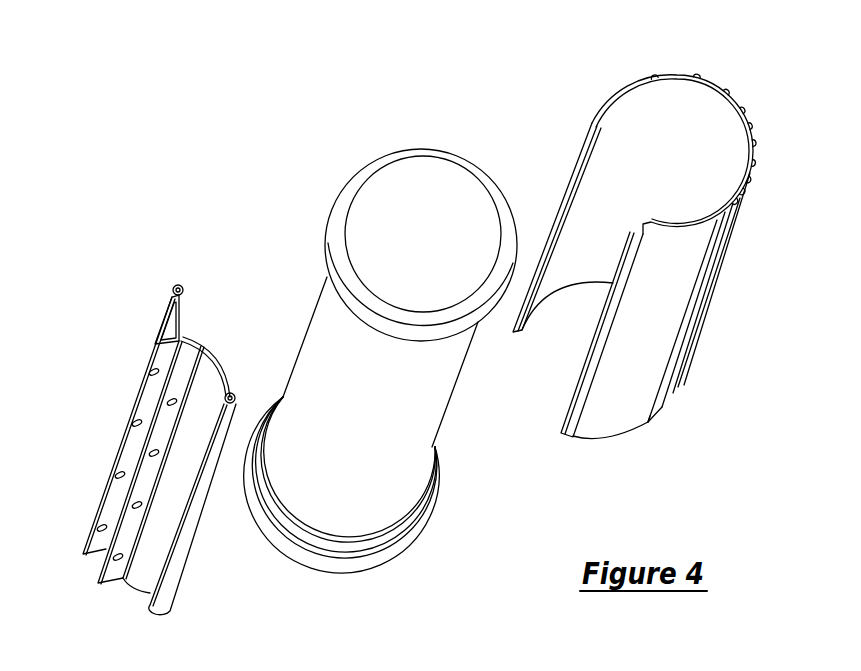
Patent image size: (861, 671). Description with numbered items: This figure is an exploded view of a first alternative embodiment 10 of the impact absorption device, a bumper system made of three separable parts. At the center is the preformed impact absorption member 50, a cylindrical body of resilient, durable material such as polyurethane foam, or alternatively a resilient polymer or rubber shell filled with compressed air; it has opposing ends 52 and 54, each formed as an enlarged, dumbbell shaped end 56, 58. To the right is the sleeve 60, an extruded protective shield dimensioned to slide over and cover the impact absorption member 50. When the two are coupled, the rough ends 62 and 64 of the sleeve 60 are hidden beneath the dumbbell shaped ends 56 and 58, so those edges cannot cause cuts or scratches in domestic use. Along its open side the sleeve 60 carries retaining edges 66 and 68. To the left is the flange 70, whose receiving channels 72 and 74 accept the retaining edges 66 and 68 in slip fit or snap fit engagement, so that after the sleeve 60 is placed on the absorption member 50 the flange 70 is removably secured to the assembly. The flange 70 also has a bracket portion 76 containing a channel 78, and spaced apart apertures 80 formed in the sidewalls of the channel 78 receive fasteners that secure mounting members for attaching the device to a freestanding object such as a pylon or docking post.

The first alternative embodiment of the impact absorption device 10 is at (303, 155).
The preformed impact absorption member 50 is at (298, 324).
The end of impact absorption member 52 is at (429, 188).
The end of impact absorption member 54 is at (346, 590).
The dumbbell shaped end 56 is at (324, 242).
The dumbbell shaped end 58 is at (280, 540).
The sleeve 60 is at (764, 219).
The end of sleeve 62 is at (719, 93).
The end of sleeve 64 is at (625, 440).
The retaining edge 66 is at (590, 364).
The retaining edge 68 is at (569, 175).
The flange 70 is at (143, 330).
The receiving channel 72 is at (235, 396).
The receiving channel 74 is at (172, 291).
The bracket portion 76 is at (112, 448).
The channel 78 is at (157, 407).
The apertures 80 is at (142, 423).